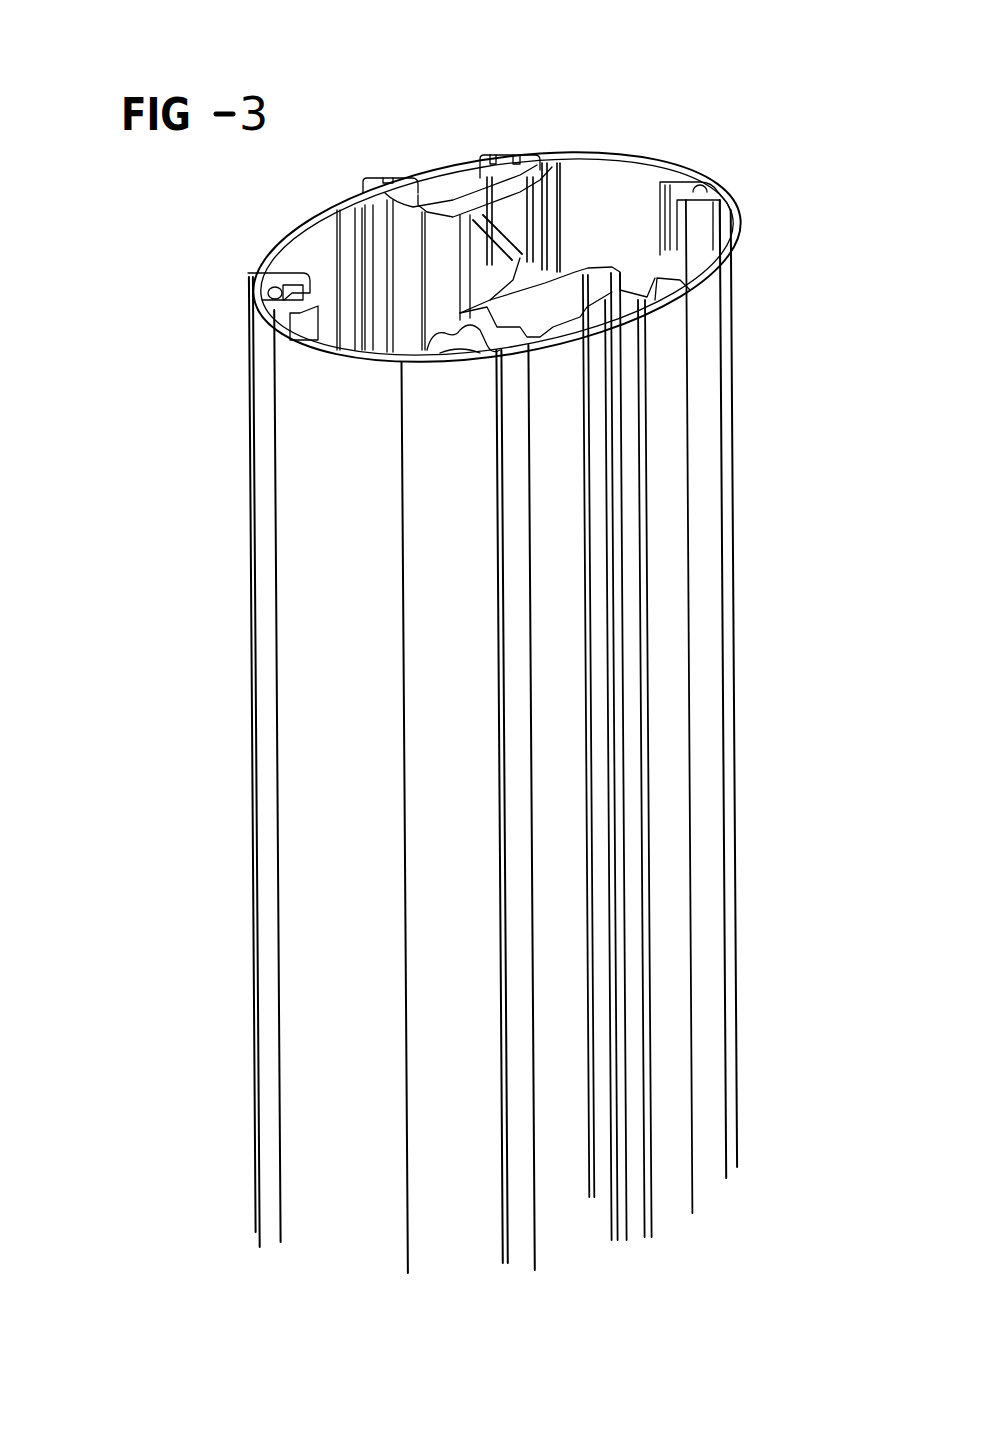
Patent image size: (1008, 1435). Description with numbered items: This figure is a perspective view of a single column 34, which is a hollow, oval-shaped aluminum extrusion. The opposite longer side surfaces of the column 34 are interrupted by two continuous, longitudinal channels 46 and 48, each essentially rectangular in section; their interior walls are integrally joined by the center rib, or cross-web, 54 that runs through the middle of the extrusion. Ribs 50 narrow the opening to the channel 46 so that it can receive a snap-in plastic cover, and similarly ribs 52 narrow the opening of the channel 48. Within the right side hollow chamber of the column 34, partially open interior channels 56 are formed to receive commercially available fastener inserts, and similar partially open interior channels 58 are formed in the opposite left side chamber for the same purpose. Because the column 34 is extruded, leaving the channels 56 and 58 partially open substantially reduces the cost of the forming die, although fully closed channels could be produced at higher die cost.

The column 34 is at (745, 350).
The longitudinal channel 46 is at (445, 192).
The longitudinal channel 48 is at (563, 425).
The ribs 50 is at (410, 162).
The ribs 52 is at (548, 340).
The center rib 54 is at (540, 232).
The partially open interior channels 56 is at (540, 148).
The partially open interior channels 58 is at (330, 186).